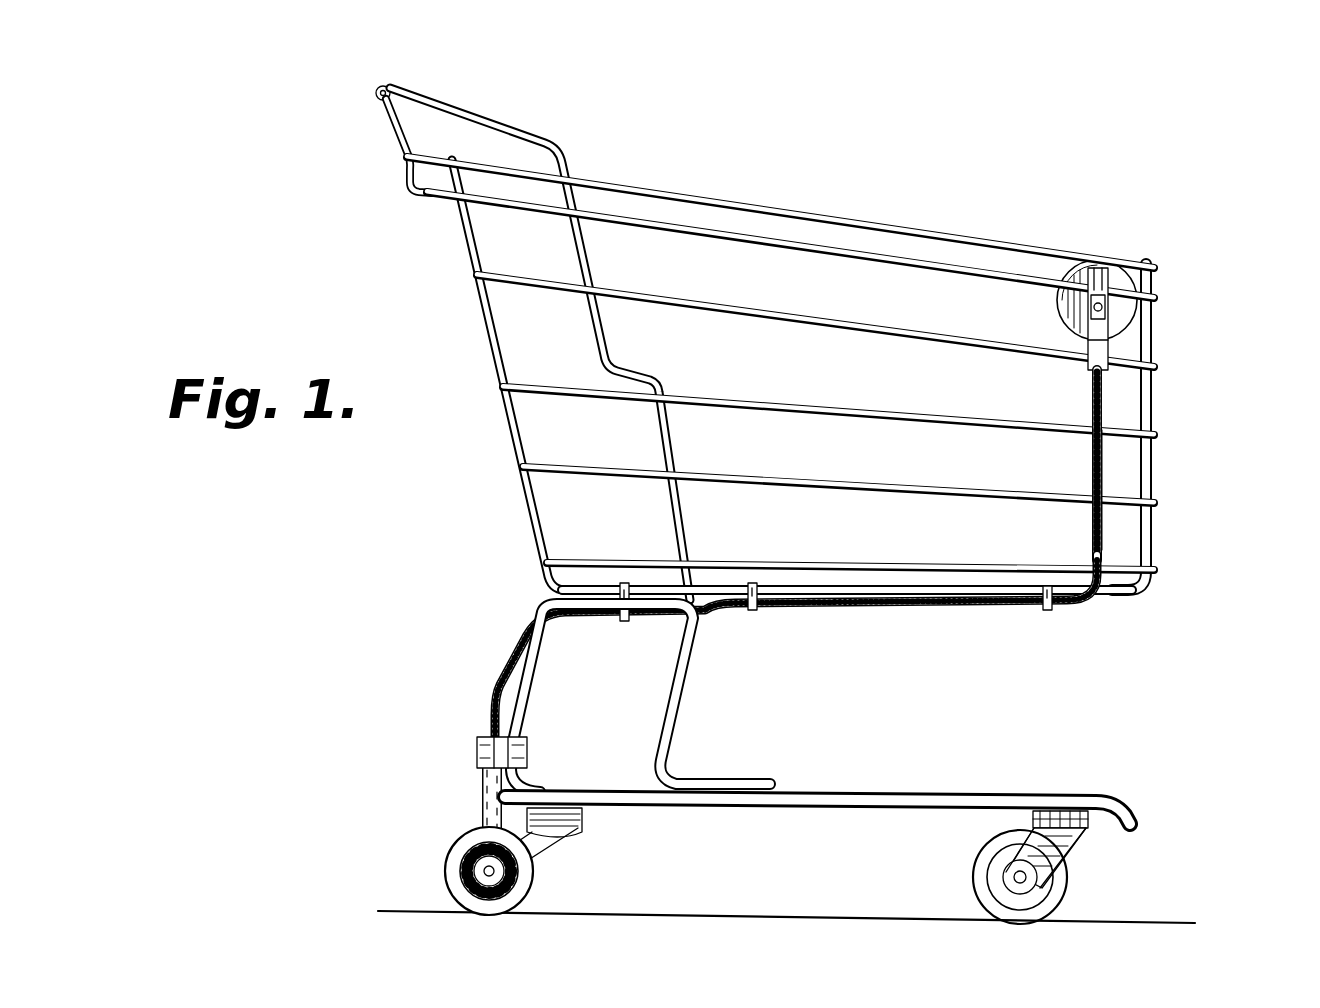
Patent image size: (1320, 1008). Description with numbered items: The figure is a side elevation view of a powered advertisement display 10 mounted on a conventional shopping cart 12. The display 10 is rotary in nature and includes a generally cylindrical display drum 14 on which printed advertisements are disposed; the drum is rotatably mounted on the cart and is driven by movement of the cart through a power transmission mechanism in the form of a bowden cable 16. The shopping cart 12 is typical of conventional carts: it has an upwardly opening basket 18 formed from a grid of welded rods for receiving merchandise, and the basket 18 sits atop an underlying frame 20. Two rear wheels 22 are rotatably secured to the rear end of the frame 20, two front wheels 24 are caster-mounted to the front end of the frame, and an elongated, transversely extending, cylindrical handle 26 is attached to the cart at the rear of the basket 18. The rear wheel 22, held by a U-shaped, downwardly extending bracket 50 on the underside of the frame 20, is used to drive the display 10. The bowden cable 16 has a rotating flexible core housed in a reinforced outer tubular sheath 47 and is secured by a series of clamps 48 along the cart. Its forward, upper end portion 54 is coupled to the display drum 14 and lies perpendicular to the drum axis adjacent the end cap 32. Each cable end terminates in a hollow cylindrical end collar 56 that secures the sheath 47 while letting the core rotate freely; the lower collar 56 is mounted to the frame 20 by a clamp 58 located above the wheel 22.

The powered advertisement display 10 is at (1107, 400).
The shopping cart 12 is at (820, 415).
The display drum 14 is at (1068, 268).
The bowden cable 16 is at (913, 604).
The basket 18 is at (1152, 536).
The frame 20 is at (664, 723).
The rear wheel 22 is at (520, 884).
The front wheel 24 is at (1053, 886).
The handle 26 is at (373, 87).
The end cap 32 is at (1124, 280).
The outer tubular sheath 47 is at (1003, 603).
The clamps 48 is at (627, 624).
The bracket 50 is at (553, 834).
The upper end portion 54 is at (1102, 462).
The end collar 56 is at (1110, 352).
The clamp 58 is at (478, 744).